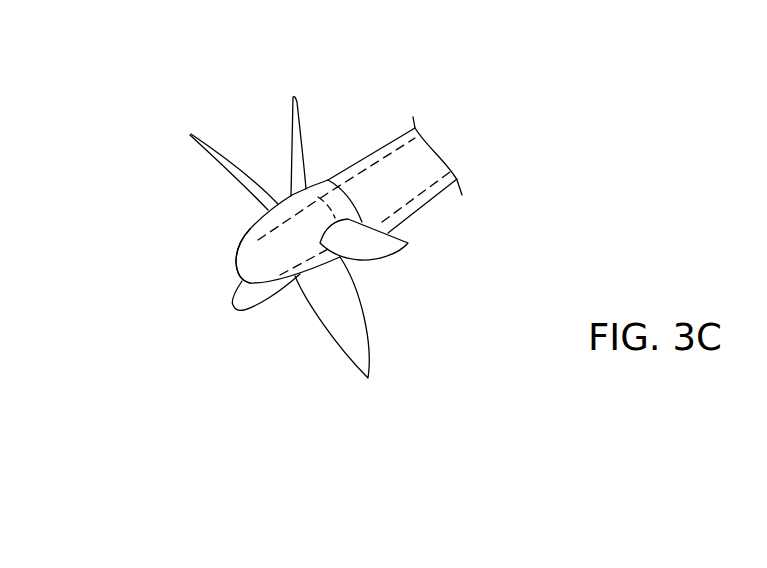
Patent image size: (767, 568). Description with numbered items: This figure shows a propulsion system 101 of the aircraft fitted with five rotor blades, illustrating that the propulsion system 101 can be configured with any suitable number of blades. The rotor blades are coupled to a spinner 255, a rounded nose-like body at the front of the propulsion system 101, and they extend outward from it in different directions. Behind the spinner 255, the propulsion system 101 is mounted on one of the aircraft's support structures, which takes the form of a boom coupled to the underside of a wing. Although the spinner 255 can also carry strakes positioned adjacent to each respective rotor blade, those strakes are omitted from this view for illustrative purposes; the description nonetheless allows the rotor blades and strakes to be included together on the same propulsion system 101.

The propulsion system 101 is at (415, 290).
The spinner 255 is at (237, 252).